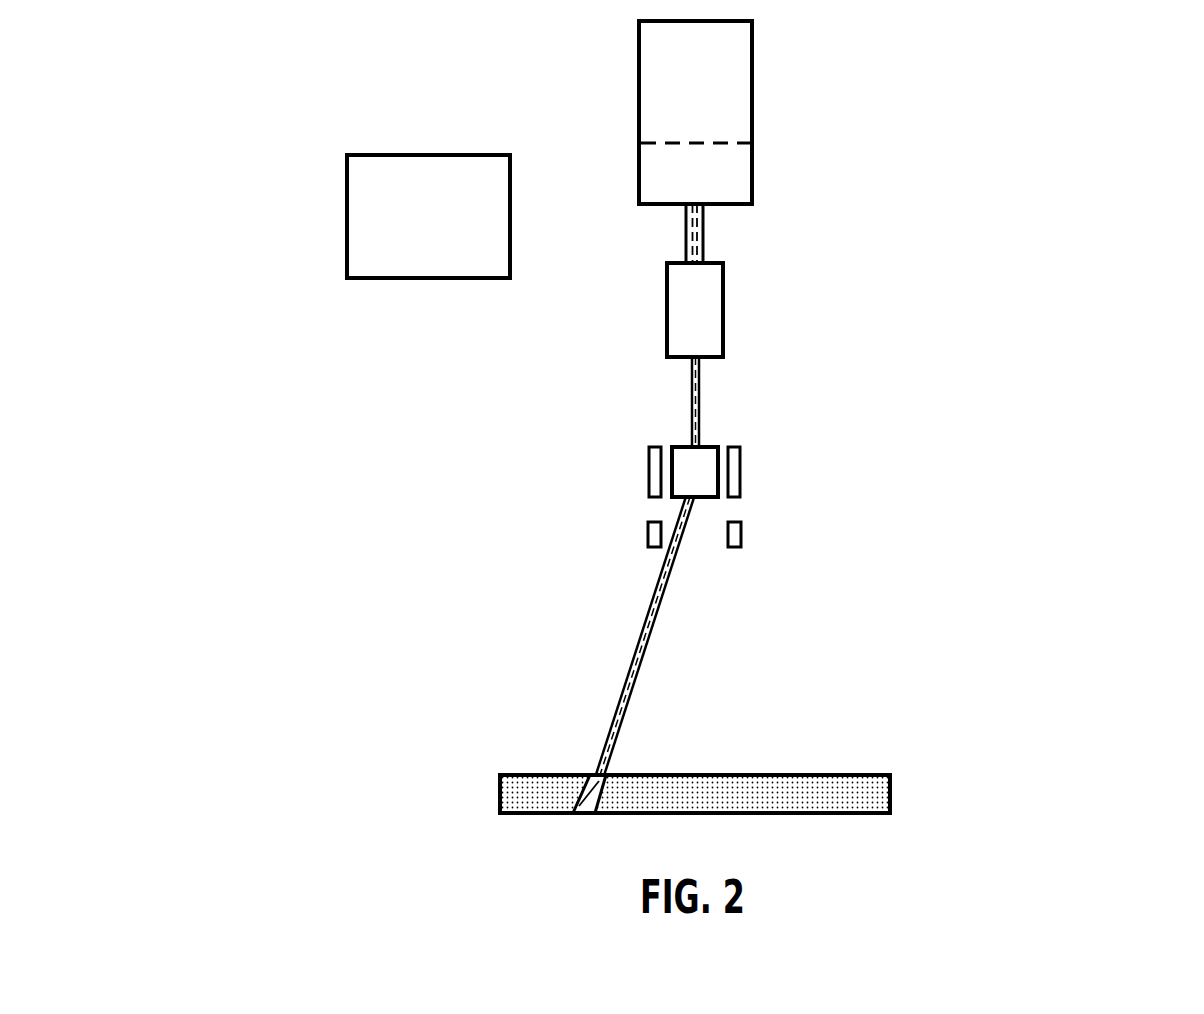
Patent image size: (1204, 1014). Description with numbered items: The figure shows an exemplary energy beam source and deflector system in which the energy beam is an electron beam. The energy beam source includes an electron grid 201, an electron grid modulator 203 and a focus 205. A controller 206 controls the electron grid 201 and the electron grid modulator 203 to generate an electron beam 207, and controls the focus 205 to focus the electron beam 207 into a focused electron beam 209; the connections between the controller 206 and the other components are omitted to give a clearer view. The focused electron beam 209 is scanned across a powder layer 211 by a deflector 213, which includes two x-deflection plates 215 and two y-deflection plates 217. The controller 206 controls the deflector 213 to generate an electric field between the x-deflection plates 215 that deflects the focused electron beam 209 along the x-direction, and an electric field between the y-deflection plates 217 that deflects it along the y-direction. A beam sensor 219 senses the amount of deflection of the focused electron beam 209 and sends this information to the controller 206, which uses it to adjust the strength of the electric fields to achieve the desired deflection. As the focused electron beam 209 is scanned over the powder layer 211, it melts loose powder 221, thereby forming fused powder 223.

The electron grid 201 is at (733, 88).
The electron grid modulator 203 is at (639, 145).
The focus 205 is at (667, 311).
The controller 206 is at (450, 248).
The electron beam 207 is at (707, 233).
The focused electron beam 209 is at (700, 402).
The powder layer 211 is at (890, 793).
The deflector 213 is at (605, 478).
The x-deflection plates 215 is at (662, 497).
The y-deflection plates 217 is at (670, 435).
The beam sensor 219 is at (648, 532).
The loose powder 221 is at (515, 791).
The fused powder 223 is at (590, 775).